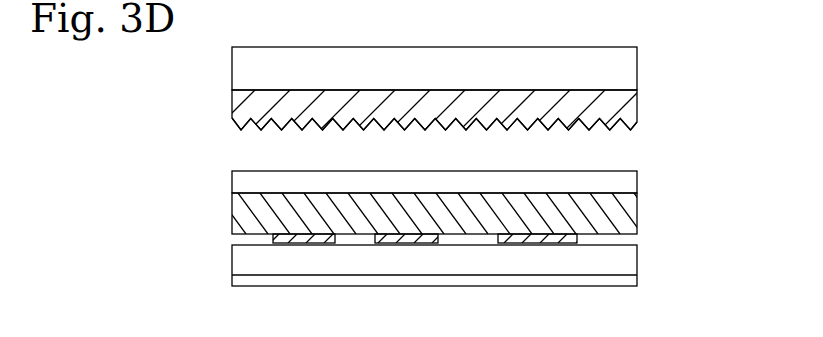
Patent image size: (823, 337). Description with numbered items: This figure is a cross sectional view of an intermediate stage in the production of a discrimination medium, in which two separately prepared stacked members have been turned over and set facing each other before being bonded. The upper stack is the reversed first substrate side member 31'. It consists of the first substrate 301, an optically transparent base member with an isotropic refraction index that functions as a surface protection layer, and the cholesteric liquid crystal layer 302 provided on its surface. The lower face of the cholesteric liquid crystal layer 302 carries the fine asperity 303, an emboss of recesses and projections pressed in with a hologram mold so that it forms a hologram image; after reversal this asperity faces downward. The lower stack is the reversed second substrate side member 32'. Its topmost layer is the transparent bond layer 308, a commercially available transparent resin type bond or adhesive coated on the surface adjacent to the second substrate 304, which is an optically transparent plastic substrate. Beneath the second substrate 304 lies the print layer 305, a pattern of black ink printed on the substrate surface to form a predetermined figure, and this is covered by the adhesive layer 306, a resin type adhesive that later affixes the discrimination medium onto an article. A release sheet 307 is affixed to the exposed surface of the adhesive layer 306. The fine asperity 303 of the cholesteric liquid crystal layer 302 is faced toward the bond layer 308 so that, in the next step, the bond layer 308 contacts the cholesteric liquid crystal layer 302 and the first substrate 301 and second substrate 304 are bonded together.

The cholesteric liquid crystal layer 302 is at (623, 68).
The first substrate 301 is at (623, 103).
The fine asperity 303 is at (614, 131).
The first substrate side member 31' is at (747, 78).
The bond layer 308 is at (622, 185).
The second substrate 304 is at (622, 222).
The print layer 305 is at (553, 237).
The adhesive layer 306 is at (622, 258).
The release sheet 307 is at (430, 278).
The second substrate side member 32' is at (747, 235).